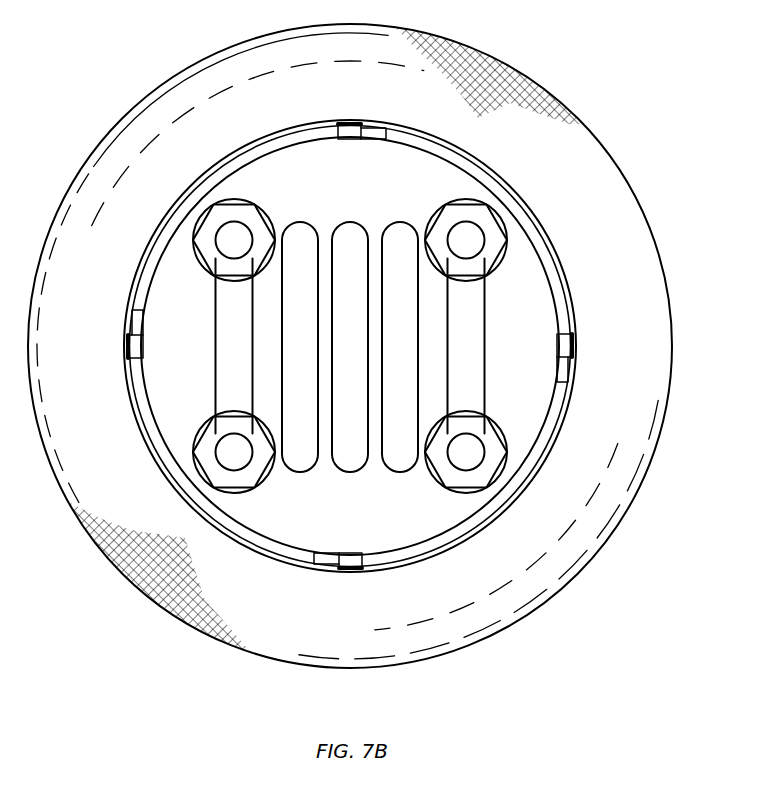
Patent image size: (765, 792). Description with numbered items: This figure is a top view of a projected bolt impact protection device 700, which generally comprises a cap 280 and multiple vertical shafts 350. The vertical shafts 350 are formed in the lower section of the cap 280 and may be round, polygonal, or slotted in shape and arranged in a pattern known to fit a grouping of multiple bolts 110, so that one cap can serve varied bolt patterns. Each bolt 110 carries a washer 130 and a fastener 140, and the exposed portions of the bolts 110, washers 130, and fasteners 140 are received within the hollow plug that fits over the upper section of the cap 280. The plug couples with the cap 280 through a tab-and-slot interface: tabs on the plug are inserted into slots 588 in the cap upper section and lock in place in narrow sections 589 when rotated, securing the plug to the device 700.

The projected bolt impact protection device 700 is at (112, 72).
The cap 280 is at (560, 92).
The slot 588 is at (340, 126).
The narrow section 589 is at (378, 130).
The fastener 140 is at (198, 226).
The washer 130 is at (216, 206).
The bolt 110 is at (249, 229).
The vertical shaft 350 is at (215, 295).